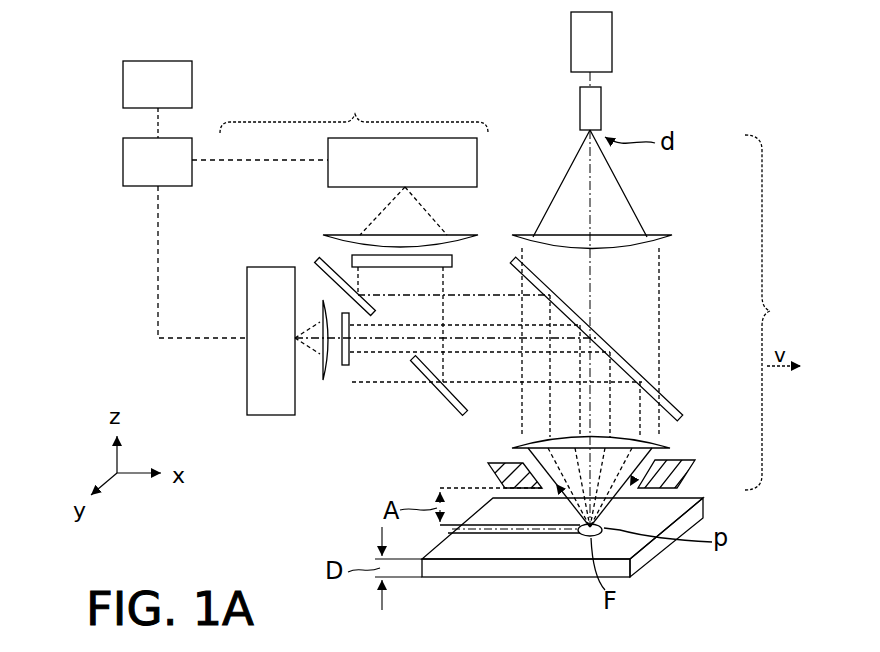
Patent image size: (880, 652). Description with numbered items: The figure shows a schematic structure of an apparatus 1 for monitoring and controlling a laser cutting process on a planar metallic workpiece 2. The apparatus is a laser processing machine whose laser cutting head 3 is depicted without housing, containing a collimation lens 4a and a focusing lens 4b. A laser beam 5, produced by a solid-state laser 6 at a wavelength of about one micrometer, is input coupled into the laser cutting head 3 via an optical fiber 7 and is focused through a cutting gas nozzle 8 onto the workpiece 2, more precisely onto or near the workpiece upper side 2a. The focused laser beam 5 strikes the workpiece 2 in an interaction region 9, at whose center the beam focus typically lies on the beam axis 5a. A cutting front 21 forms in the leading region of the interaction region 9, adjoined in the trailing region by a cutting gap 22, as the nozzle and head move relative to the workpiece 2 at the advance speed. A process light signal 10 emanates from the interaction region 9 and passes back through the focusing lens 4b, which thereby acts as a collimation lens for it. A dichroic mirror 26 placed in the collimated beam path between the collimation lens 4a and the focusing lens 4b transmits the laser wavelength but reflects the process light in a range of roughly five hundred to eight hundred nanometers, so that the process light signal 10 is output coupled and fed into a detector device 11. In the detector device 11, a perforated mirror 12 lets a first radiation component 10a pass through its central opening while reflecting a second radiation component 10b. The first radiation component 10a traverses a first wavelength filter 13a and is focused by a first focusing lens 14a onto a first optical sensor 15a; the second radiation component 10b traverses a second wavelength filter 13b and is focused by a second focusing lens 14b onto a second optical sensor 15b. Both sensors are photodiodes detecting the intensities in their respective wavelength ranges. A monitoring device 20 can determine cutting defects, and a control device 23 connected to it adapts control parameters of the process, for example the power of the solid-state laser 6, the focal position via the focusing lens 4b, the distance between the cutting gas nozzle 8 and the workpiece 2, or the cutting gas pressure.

The apparatus 1 is at (712, 82).
The workpiece 2 is at (705, 512).
The workpiece upper side 2a is at (640, 498).
The laser cutting head 3 is at (767, 312).
The collimation lens 4a is at (644, 239).
The focusing lens 4b is at (660, 438).
The laser beam 5 is at (660, 295).
The beam axis 5a is at (590, 295).
The solid-state laser 6 is at (612, 46).
The optical fiber 7 is at (601, 103).
The cutting gas nozzle 8 is at (680, 470).
The interaction region 9 is at (603, 537).
The process light signal 10 is at (556, 488).
The first radiation component 10a is at (396, 354).
The second radiation component 10b is at (362, 283).
The detector device 11 is at (354, 107).
The perforated mirror 12 is at (317, 261).
The first wavelength filter 13a is at (348, 367).
The second wavelength filter 13b is at (350, 261).
The first focusing lens 14a is at (322, 376).
The second focusing lens 14b is at (450, 238).
The first optical sensor 15a is at (270, 400).
The second optical sensor 15b is at (462, 172).
The monitoring device 20 is at (142, 160).
The cutting front 21 is at (605, 533).
The cutting gap 22 is at (505, 535).
The control device 23 is at (142, 82).
The dichroic mirror 26 is at (627, 365).